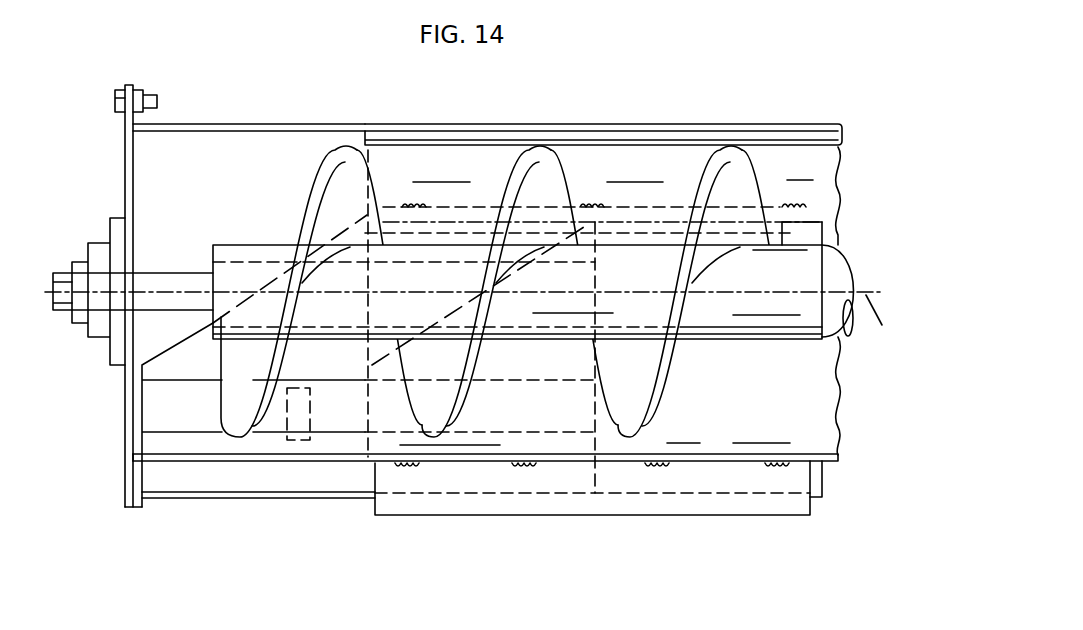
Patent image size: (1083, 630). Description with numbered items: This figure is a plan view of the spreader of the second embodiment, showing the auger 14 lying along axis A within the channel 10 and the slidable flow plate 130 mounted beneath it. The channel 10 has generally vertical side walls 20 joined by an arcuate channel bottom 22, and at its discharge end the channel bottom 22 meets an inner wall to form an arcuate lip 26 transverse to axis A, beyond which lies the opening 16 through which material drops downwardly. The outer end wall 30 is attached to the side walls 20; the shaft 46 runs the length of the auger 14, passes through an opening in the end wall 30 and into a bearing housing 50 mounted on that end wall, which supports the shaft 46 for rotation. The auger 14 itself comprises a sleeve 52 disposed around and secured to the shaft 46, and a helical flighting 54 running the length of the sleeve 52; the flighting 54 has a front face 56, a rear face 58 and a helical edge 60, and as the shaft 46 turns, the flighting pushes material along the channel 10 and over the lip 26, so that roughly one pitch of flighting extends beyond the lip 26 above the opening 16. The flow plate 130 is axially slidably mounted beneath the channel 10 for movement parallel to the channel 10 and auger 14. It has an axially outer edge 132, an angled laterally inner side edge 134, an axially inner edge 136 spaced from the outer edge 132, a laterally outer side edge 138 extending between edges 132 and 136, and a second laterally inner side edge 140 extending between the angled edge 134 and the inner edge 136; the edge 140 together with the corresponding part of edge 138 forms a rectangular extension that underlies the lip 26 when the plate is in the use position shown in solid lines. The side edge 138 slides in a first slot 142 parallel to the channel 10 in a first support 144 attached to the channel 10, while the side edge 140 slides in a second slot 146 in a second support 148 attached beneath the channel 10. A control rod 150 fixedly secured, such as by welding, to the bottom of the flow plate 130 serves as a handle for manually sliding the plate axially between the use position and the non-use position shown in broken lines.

The channel 10 is at (687, 122).
The auger 14 is at (558, 153).
The opening 16 is at (212, 153).
The side walls 20 is at (790, 125).
The channel bottom 22 is at (803, 368).
The lip 26 is at (357, 147).
The end wall 30 is at (125, 160).
The shaft 46 is at (197, 280).
The bearing housing 50 is at (100, 247).
The sleeve 52 is at (838, 268).
The helical flighting 54 is at (322, 150).
The front face 56 is at (647, 388).
The rear face 58 is at (557, 192).
The helical edge 60 is at (522, 163).
The flow plate 130 is at (147, 393).
The axially outer edge 132 is at (140, 413).
The angled laterally inner side edge 134 is at (183, 343).
The axially inner edge 136 is at (598, 280).
The laterally outer side edge 138 is at (298, 498).
The second laterally inner side edge 140 is at (432, 218).
The first slot 142 is at (677, 493).
The first support 144 is at (513, 517).
The second slot 146 is at (395, 220).
The second support 148 is at (642, 207).
The control rod 150 is at (306, 392).
The axis A is at (470, 318).